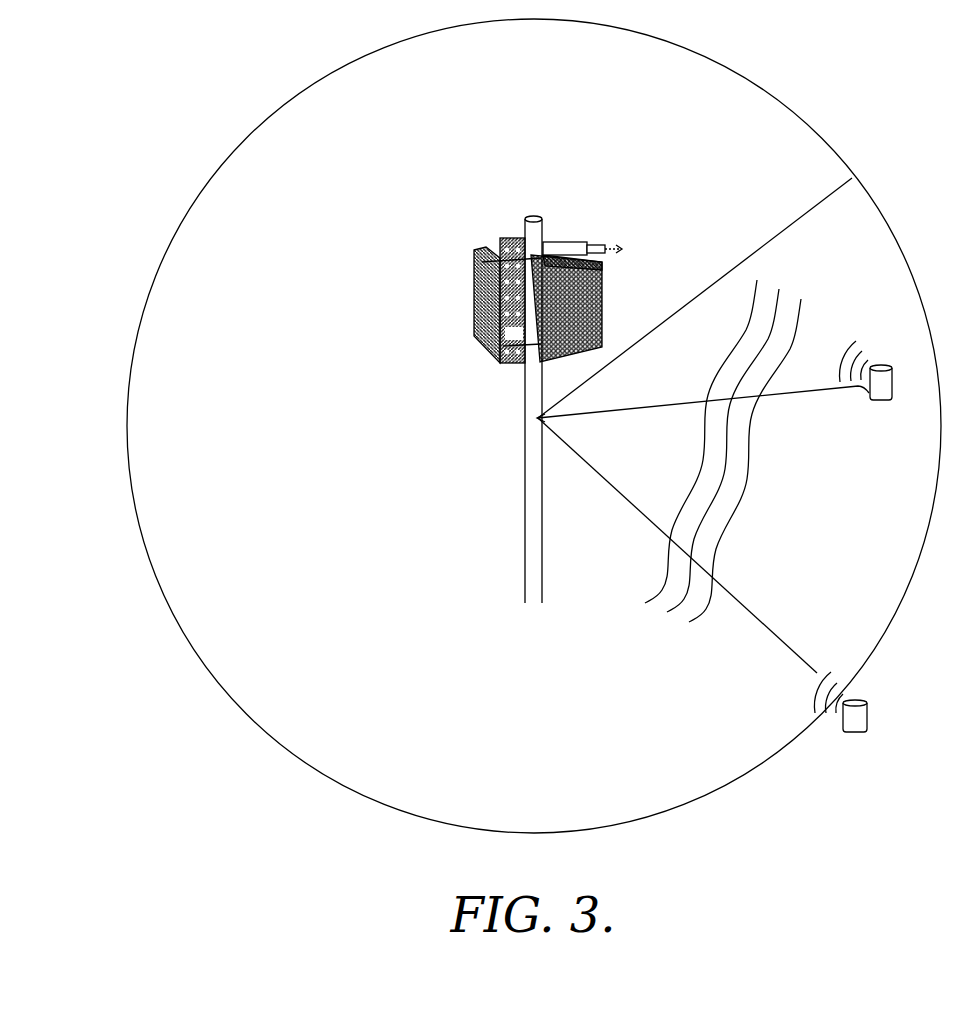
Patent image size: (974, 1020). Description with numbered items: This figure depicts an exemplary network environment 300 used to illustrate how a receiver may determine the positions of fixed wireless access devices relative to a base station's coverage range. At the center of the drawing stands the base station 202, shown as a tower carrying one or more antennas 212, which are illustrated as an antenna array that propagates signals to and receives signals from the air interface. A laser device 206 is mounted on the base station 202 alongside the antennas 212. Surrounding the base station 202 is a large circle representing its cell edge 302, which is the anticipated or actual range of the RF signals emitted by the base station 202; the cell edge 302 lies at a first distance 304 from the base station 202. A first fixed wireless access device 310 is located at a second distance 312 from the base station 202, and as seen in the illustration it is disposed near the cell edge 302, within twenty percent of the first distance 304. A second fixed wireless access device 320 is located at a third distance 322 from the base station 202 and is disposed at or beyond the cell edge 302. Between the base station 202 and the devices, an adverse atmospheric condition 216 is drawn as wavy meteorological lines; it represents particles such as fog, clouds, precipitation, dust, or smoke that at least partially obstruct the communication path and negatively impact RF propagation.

The network environment 300 is at (136, 80).
The cell edge 302 is at (807, 117).
The base station 202 is at (496, 507).
The laser device 206 is at (565, 242).
The antennas 212 is at (441, 278).
The first distance 304 is at (690, 301).
The second distance 312 is at (682, 404).
The third distance 322 is at (755, 616).
The adverse atmospheric condition 216 is at (818, 320).
The first fixed wireless access device 310 is at (884, 400).
The second fixed wireless access device 320 is at (858, 733).